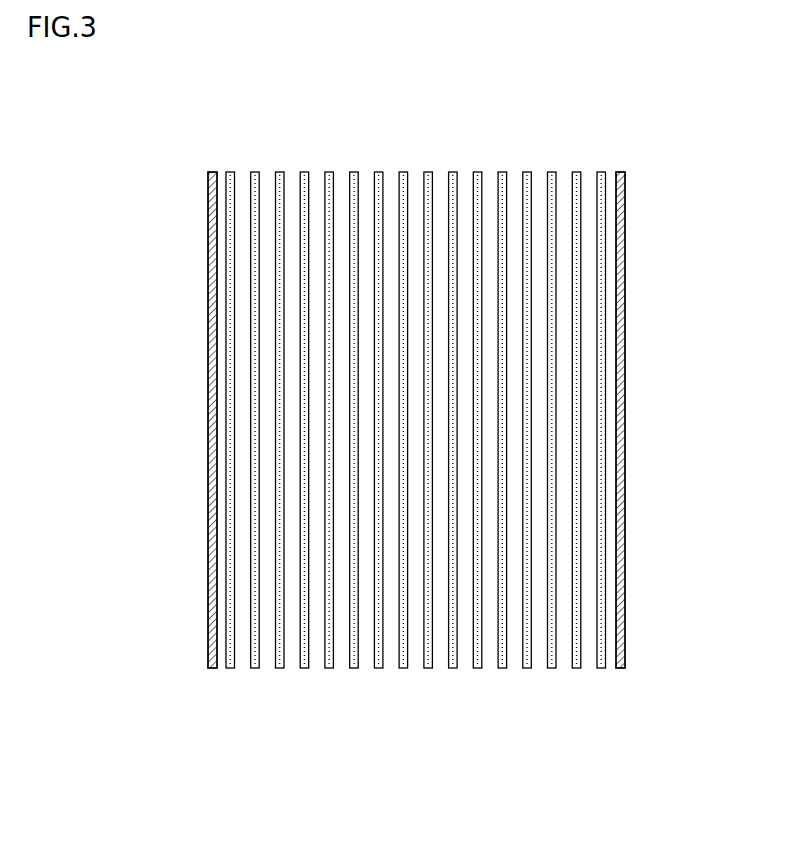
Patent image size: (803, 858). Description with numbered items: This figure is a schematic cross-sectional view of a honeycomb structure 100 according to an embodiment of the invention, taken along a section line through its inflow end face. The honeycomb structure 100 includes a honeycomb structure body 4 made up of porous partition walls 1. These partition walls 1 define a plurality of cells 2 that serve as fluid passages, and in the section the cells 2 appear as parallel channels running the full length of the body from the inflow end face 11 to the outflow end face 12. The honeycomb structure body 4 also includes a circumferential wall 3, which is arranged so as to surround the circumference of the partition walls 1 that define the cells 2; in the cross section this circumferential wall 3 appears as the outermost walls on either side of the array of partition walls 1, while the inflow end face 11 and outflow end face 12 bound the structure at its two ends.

The honeycomb structure 100 is at (686, 58).
The partition wall 1 is at (478, 178).
The cell 2 is at (365, 192).
The circumferential wall 3 is at (625, 255).
The honeycomb structure body 4 is at (632, 358).
The inflow end face 11 is at (232, 160).
The outflow end face 12 is at (228, 676).